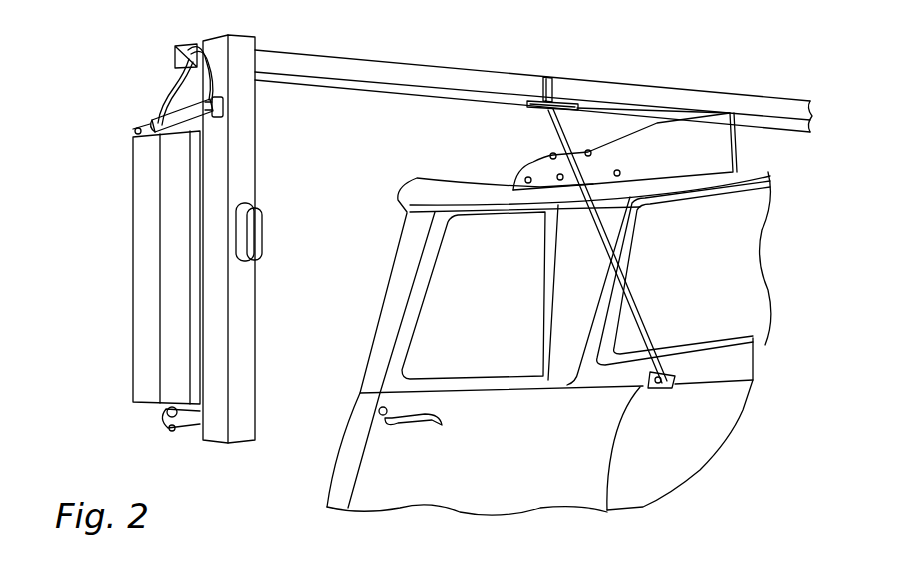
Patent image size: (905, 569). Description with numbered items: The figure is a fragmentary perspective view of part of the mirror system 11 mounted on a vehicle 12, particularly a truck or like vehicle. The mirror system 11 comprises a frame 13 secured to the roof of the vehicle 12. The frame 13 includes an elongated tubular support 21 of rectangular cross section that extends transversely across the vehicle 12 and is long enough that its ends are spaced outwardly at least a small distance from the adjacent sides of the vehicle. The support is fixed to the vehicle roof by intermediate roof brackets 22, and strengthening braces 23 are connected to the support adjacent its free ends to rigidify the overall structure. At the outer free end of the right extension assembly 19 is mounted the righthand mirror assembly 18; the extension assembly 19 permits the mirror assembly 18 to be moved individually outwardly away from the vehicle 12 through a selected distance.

The mirror system 11 is at (569, 56).
The vehicle 12 is at (702, 440).
The frame 13 is at (663, 84).
The righthand mirror assembly 18 is at (128, 250).
The right extension assembly 19 is at (443, 68).
The elongated tubular support 21 is at (778, 103).
The roof brackets 22 is at (735, 138).
The strengthening braces 23 is at (635, 305).